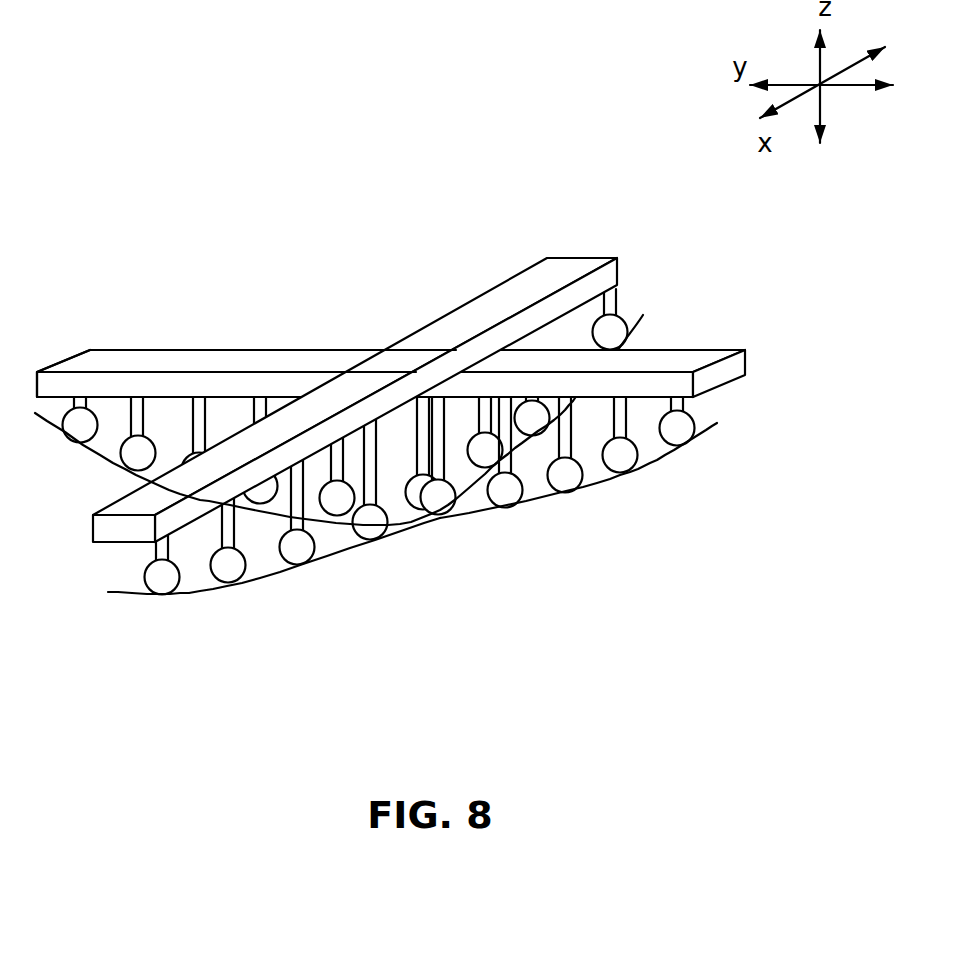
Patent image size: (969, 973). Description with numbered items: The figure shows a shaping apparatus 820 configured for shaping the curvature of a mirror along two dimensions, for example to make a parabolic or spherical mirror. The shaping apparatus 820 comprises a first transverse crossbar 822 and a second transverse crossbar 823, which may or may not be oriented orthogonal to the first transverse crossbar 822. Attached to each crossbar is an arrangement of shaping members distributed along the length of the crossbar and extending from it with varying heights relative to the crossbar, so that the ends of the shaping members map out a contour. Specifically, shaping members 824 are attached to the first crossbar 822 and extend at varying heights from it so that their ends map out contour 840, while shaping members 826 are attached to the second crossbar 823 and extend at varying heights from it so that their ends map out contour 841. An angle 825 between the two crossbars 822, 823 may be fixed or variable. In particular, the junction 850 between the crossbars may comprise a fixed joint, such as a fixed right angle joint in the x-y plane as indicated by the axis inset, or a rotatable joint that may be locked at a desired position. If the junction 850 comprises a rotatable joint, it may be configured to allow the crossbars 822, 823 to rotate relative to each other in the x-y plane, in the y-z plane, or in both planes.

The shaping apparatus 820 is at (130, 250).
The first transverse crossbar 822 is at (680, 357).
The second transverse crossbar 823 is at (530, 285).
The shaping members 824 is at (677, 428).
The angle 825 is at (308, 382).
The shaping members 826 is at (162, 577).
The contour 840 is at (200, 592).
The contour 841 is at (597, 487).
The junction 850 is at (393, 358).